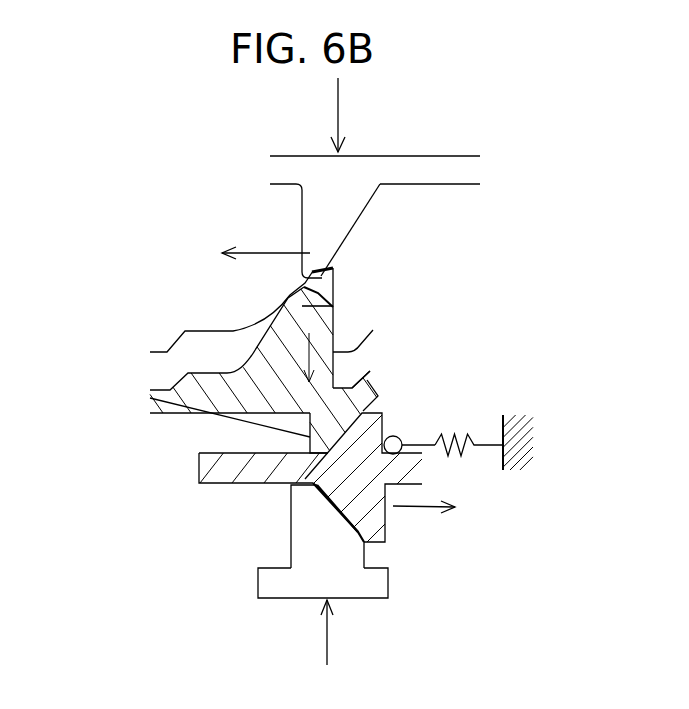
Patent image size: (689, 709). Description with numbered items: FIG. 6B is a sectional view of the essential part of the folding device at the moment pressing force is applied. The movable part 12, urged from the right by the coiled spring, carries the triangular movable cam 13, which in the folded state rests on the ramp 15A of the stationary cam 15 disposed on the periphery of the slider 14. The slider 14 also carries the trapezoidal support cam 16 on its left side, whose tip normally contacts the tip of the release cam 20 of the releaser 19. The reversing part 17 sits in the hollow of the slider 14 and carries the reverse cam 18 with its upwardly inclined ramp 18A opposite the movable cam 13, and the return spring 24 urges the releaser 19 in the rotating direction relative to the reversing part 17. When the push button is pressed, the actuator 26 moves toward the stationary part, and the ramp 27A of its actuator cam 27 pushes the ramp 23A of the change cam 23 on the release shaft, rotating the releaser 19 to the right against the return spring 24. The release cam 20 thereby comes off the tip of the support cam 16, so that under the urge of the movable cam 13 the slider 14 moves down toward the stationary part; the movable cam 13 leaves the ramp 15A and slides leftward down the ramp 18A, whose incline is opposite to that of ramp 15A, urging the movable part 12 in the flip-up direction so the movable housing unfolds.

The movable part 12 is at (272, 172).
The movable cam 13 is at (313, 270).
The slider 14 is at (384, 399).
The stationary cam 15 is at (326, 304).
The ramp 15A is at (337, 305).
The support cam 16 is at (315, 442).
The reversing part 17 is at (168, 367).
The reverse cam 18 is at (303, 296).
The ramp 18A is at (332, 269).
The releaser 19 is at (212, 475).
The release cam 20 is at (383, 423).
The change cam 23 is at (385, 512).
The ramp 23A is at (363, 537).
The return spring 24 is at (472, 457).
The actuator 26 is at (272, 583).
The actuator cam 27 is at (296, 518).
The ramp 27A is at (347, 518).